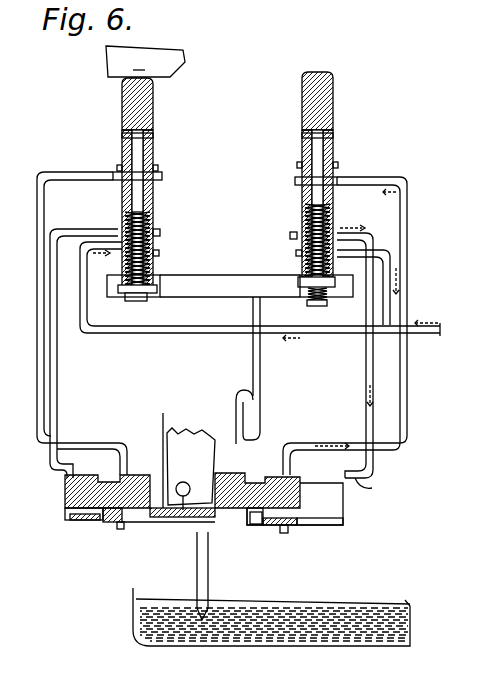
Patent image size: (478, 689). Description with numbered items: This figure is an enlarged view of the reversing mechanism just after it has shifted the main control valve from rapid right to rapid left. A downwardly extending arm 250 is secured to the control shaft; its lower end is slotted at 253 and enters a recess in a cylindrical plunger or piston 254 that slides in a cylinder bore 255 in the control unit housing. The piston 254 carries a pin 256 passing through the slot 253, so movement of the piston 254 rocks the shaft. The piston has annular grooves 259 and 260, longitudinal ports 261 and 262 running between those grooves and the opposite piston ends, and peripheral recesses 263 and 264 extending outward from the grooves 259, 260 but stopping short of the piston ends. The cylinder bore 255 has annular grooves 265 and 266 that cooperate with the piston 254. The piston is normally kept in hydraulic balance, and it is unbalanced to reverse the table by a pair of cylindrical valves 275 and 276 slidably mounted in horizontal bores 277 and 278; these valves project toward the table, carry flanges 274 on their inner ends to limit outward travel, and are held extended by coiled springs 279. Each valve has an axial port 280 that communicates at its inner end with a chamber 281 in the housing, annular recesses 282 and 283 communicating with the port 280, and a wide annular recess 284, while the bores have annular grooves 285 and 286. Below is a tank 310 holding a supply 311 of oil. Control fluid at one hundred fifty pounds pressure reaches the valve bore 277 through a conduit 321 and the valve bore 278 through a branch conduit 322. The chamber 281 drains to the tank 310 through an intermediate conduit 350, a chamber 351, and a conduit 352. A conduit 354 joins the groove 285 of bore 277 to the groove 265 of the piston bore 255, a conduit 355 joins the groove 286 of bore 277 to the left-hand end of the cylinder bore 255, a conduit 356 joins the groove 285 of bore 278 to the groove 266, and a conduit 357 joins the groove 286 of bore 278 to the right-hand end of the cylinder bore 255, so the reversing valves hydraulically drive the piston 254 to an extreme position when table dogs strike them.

The arm 250 is at (186, 432).
The slot 253 is at (183, 482).
The plunger or piston 254 is at (340, 513).
The cylinder bore 255 is at (330, 524).
The pin 256 is at (182, 518).
The annular groove 259 is at (103, 521).
The annular groove 260 is at (255, 527).
The longitudinal port 261 is at (63, 505).
The longitudinal port 262 is at (300, 526).
The peripheral recess 263 is at (93, 472).
The peripheral recess 264 is at (272, 473).
The annular groove 265 is at (121, 530).
The annular groove 266 is at (284, 533).
The flange 274 is at (150, 294).
The cylindrical valve 275 is at (121, 100).
The cylindrical valve 276 is at (333, 99).
The horizontal bore 277 is at (153, 113).
The horizontal bore 278 is at (302, 112).
The coiled spring 279 is at (135, 301).
The axial port 280 is at (122, 149).
The chamber 281 is at (222, 284).
The annular recess 282 is at (155, 134).
The annular recess 283 is at (155, 168).
The wide annular recess 284 is at (158, 254).
The annular groove 285 is at (161, 177).
The annular groove 286 is at (160, 232).
The tank 310 is at (318, 647).
The supply of fluid 311 is at (373, 617).
The conduit 321 is at (437, 334).
The branch conduit 322 is at (390, 298).
The intermediate conduit 350 is at (260, 385).
The chamber 351 is at (248, 402).
The conduit 352 is at (208, 580).
The conduit 354 is at (44, 362).
The conduit 355 is at (57, 380).
The conduit 356 is at (407, 380).
The conduit 357 is at (366, 385).